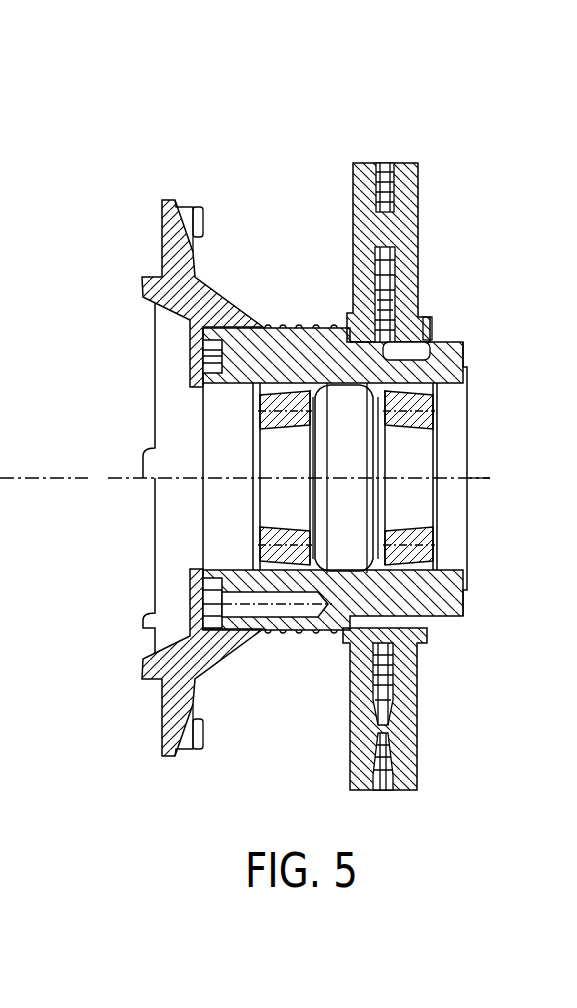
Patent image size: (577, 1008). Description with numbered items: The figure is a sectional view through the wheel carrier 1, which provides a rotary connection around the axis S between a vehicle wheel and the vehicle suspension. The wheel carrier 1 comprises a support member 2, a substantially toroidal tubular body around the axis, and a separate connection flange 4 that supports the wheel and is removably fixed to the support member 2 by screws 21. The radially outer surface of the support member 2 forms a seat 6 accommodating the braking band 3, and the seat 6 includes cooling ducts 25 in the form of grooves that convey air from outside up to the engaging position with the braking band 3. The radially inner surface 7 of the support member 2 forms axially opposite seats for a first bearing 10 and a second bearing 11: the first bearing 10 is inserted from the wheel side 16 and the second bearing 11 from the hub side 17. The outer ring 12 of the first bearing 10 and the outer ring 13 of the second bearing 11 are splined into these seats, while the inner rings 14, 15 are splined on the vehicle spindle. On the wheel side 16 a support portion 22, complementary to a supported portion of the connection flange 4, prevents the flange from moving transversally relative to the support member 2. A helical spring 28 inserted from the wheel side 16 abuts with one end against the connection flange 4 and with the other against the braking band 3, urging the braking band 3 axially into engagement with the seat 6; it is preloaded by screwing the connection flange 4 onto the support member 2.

The wheel carrier 1 is at (287, 100).
The support member 2 is at (310, 362).
The braking band 3 is at (407, 230).
The connection flange 4 is at (188, 282).
The seat 6 is at (293, 323).
The radially inner surface 7 is at (453, 385).
The first bearing 10 is at (260, 432).
The second bearing 11 is at (428, 426).
The outer ring of first bearing 12 is at (302, 397).
The outer ring of second bearing 13 is at (412, 352).
The inner ring of first bearing 14 is at (282, 412).
The inner ring of second bearing 15 is at (400, 423).
The wheel side 16 is at (92, 476).
The hub side 17 is at (550, 492).
The screws 21 is at (215, 353).
The support portion 22 is at (224, 402).
The cooling ducts 25 is at (438, 345).
The helical spring 28 is at (287, 633).